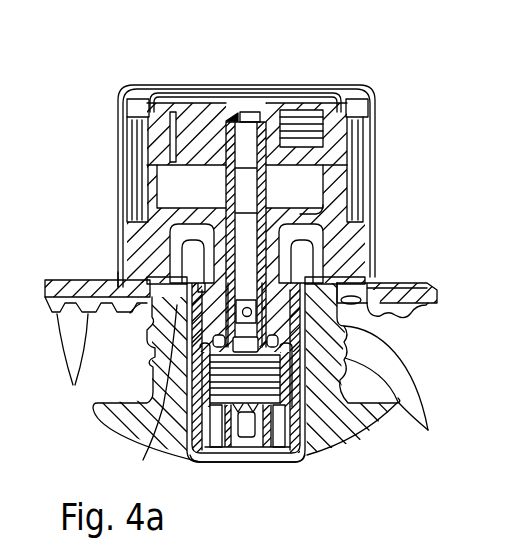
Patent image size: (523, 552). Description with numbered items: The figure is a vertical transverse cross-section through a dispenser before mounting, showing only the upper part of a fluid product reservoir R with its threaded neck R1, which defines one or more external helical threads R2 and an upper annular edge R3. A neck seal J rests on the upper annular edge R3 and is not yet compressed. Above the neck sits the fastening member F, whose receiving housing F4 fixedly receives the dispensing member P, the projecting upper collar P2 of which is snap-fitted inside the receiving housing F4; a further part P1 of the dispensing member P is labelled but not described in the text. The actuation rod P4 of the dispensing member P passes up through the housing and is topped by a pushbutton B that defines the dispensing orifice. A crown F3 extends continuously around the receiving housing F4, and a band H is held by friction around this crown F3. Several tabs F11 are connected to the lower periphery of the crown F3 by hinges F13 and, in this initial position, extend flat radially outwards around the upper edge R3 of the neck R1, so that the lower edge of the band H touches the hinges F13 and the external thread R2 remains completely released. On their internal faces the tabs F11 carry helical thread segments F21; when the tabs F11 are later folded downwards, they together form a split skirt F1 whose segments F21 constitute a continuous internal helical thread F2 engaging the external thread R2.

The pushbutton B is at (257, 86).
The band H is at (123, 107).
The dispensing member P is at (205, 462).
The piston base P1 is at (310, 457).
The projecting upper collar P2 is at (308, 232).
The actuation rod P4 is at (280, 163).
The fastening member F is at (374, 244).
The split skirt F1 is at (438, 294).
The continuous helical thread F2 is at (413, 318).
The crown F3 is at (358, 263).
The receiving housing F4 is at (318, 213).
The tabs F11 is at (76, 278).
The hinges F13 is at (118, 272).
The internal helical thread segments F21 is at (93, 402).
The neck seal J is at (130, 313).
The fluid product reservoir R is at (360, 414).
The threaded neck R1 is at (318, 358).
The external helical thread R2 is at (360, 365).
The upper annular edge R3 is at (143, 460).